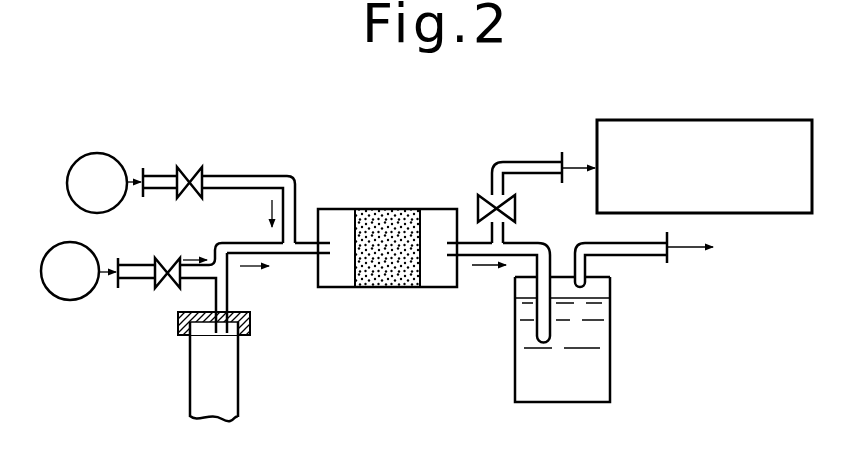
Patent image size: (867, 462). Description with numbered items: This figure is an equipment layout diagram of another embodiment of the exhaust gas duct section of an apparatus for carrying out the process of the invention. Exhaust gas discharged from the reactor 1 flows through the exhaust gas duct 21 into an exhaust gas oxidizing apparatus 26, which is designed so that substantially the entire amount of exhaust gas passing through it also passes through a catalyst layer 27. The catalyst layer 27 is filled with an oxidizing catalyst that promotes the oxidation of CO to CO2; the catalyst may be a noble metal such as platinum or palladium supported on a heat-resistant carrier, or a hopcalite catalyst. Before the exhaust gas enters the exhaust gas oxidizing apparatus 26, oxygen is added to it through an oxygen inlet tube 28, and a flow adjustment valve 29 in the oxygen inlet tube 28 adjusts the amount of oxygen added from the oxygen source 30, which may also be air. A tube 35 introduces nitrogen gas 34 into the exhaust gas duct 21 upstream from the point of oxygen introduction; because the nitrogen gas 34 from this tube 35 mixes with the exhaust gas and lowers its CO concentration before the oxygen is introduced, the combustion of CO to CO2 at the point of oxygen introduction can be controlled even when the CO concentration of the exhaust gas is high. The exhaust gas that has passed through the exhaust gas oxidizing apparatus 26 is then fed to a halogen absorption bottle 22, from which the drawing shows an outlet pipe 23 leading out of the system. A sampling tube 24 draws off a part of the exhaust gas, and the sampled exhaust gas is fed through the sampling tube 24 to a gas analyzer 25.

The reactor 1 is at (190, 378).
The exhaust gas duct 21 is at (228, 242).
The halogen absorption bottle 22 is at (610, 373).
The pipe out of system 23 is at (586, 243).
The sampling tube 24 is at (529, 162).
The gas analyzer 25 is at (667, 120).
The exhaust gas oxidizing apparatus 26 is at (342, 208).
The catalyst layer 27 is at (392, 212).
The oxygen inlet tube 28 is at (240, 175).
The flow adjustment valve 29 is at (187, 166).
The oxygen source 30 is at (115, 158).
The nitrogen gas 34 is at (52, 247).
The tube 35 is at (145, 258).